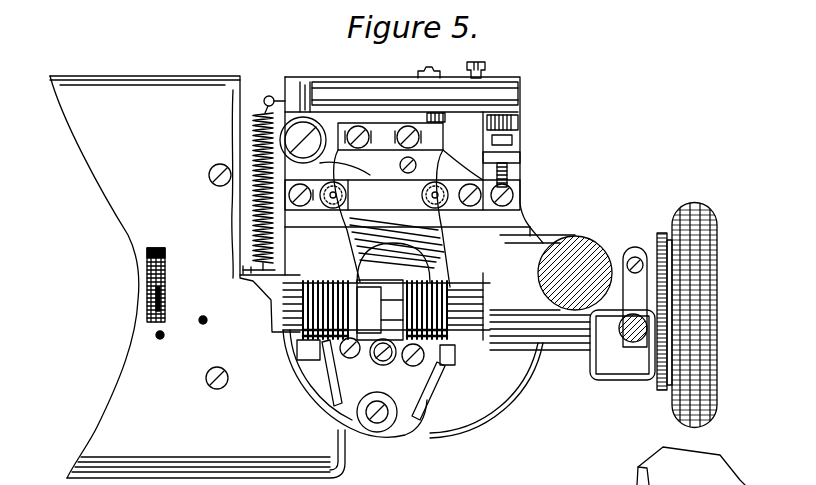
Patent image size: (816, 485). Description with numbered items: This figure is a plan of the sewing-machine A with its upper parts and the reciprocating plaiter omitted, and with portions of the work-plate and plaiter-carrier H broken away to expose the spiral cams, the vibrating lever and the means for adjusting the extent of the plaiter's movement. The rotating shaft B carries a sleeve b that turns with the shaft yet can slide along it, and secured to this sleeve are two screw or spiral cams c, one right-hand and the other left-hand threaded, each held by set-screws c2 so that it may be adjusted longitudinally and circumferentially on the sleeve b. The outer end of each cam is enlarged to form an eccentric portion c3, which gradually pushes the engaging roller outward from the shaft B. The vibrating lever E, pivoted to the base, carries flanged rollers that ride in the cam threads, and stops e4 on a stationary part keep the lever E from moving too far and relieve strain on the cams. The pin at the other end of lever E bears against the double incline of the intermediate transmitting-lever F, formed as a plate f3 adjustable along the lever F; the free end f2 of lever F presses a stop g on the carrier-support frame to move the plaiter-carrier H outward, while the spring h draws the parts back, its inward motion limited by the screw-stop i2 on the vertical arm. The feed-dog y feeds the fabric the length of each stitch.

The sewing-machine A is at (197, 277).
The rotating shaft B is at (573, 321).
The vibrating lever E is at (392, 218).
The intermediate transmitting-lever F is at (390, 136).
The plaiter-carrier H is at (391, 176).
The sleeve b is at (303, 284).
The screw or spiral cam c is at (386, 297).
The set-screw c2 is at (312, 385).
The eccentric portion c3 is at (465, 362).
The stop e4 is at (402, 189).
The free end f2 is at (463, 156).
The plate f3 is at (349, 160).
The stop or bearing-piece g is at (425, 68).
The spring h is at (263, 185).
The contact screw i2 is at (509, 180).
The feed-dog y is at (163, 285).